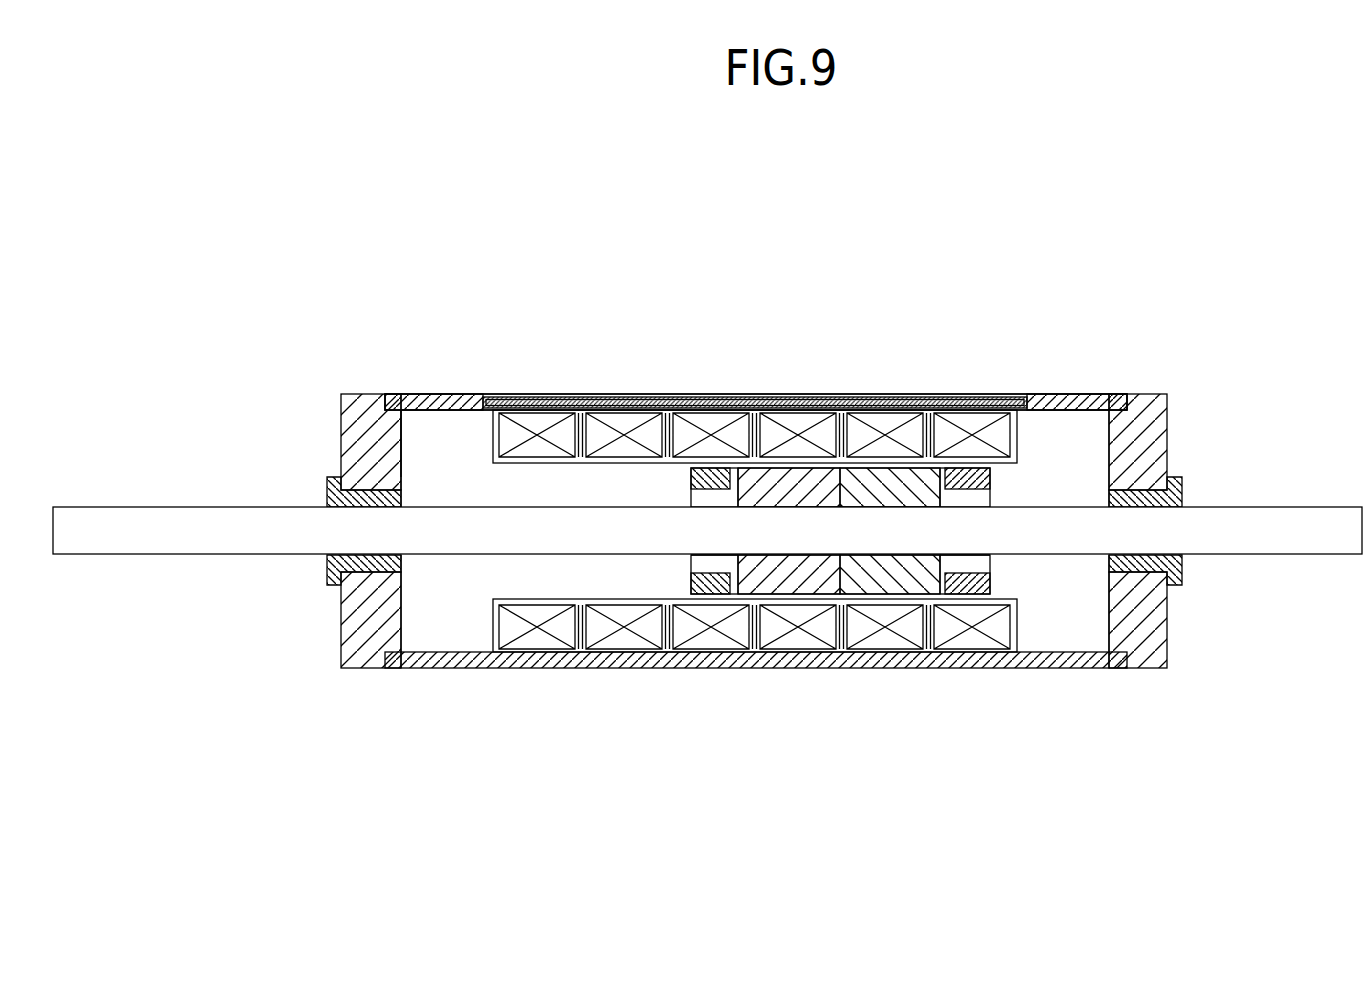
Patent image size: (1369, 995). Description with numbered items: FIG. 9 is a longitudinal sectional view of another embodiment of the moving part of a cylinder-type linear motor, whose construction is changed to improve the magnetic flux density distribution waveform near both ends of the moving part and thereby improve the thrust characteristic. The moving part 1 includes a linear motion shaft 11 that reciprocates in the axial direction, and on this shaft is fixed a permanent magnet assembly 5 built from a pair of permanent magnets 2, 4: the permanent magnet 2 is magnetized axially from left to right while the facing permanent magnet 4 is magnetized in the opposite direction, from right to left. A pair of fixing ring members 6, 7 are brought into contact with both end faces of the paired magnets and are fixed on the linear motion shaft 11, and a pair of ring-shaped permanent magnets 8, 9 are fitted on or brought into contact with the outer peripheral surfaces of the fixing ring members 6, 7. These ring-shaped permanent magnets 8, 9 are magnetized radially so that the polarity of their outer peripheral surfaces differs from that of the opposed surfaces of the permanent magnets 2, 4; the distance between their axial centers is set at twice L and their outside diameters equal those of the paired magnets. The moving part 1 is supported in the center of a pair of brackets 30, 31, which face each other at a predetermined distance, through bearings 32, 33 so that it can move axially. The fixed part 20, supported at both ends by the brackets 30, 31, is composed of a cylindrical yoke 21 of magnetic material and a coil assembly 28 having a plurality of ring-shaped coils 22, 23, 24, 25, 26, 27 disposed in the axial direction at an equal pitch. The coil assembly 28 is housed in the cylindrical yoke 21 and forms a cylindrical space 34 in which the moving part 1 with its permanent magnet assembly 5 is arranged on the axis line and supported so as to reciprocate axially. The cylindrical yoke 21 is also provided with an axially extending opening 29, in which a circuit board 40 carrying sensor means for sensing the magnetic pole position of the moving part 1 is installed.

The moving part 1 is at (1003, 495).
The permanent magnet 2 is at (795, 577).
The permanent magnet 4 is at (885, 575).
The permanent magnet assembly 5 is at (702, 592).
The fixing ring member 6 is at (697, 563).
The fixing ring member 7 is at (982, 564).
The ring-shaped permanent magnet 8 is at (718, 590).
The ring-shaped permanent magnet 9 is at (973, 585).
The linear motion shaft 11 is at (1258, 522).
The fixed part 20 is at (497, 609).
The cylindrical yoke 21 is at (405, 658).
The ring-shaped coil 22 is at (538, 418).
The ring-shaped coil 23 is at (631, 420).
The ring-shaped coil 24 is at (720, 420).
The ring-shaped coil 25 is at (790, 420).
The ring-shaped coil 26 is at (877, 420).
The ring-shaped coil 27 is at (957, 420).
The coil assembly 28 is at (1027, 437).
The opening 29 is at (600, 397).
The bracket 30 is at (349, 656).
The bracket 31 is at (1150, 650).
The bearing 32 is at (327, 567).
The bearing 33 is at (1182, 568).
The cylindrical space 34 is at (603, 486).
The circuit board 40 is at (493, 398).